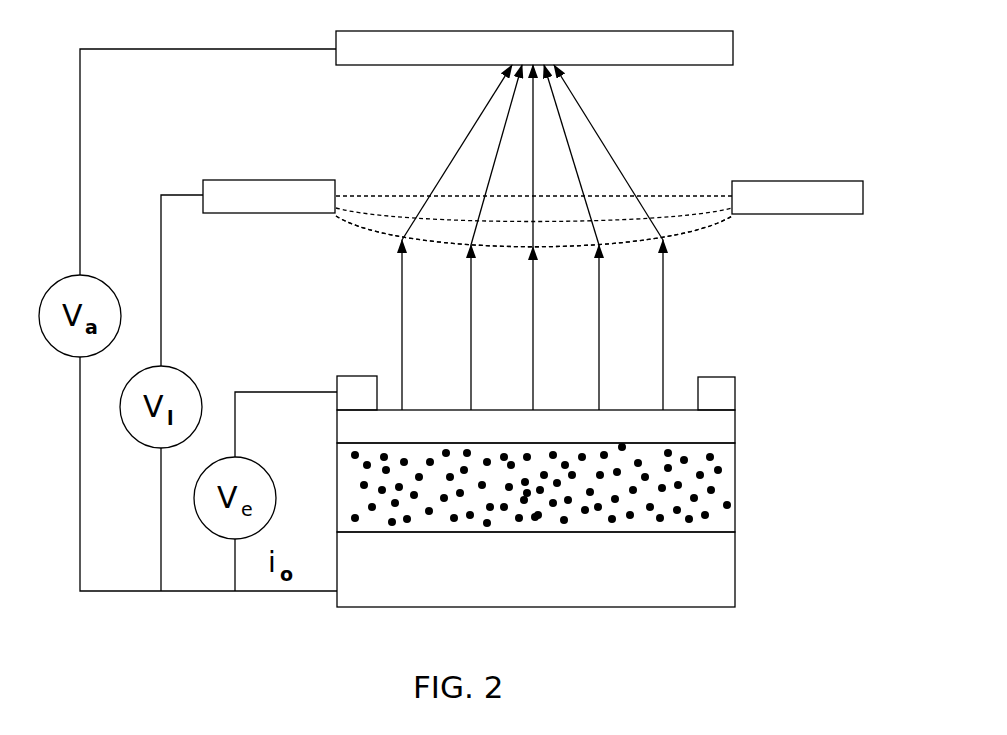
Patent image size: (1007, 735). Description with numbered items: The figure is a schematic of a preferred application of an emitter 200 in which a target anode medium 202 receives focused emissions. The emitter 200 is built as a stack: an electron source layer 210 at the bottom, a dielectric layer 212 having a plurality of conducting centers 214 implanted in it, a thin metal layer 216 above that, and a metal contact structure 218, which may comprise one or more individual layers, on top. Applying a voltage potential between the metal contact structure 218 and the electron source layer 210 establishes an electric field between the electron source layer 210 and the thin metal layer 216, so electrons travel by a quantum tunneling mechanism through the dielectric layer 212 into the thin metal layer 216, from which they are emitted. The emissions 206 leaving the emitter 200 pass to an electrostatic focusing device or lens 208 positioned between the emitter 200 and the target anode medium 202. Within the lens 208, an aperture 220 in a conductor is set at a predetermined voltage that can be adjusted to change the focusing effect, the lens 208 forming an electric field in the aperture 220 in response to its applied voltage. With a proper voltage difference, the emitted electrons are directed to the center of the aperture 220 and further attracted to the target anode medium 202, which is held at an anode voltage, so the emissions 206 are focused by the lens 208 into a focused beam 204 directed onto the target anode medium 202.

The emitter 200 is at (548, 443).
The target anode medium 202 is at (734, 46).
The focused beam 204 is at (636, 162).
The emissions 206 is at (700, 312).
The lens 208 is at (252, 180).
The electron source layer 210 is at (737, 590).
The dielectric layer 212 is at (737, 512).
The conducting centers 214 is at (720, 470).
The thin metal layer 216 is at (737, 425).
The metal contact structure 218 is at (358, 392).
The aperture 220 is at (700, 232).